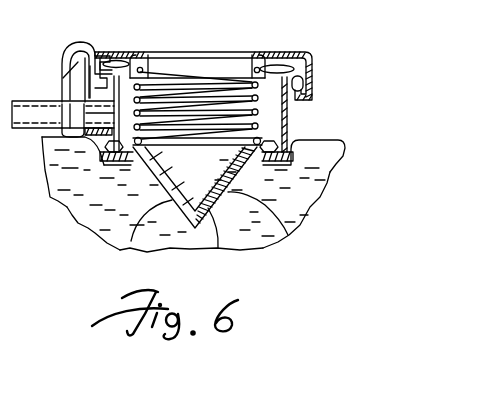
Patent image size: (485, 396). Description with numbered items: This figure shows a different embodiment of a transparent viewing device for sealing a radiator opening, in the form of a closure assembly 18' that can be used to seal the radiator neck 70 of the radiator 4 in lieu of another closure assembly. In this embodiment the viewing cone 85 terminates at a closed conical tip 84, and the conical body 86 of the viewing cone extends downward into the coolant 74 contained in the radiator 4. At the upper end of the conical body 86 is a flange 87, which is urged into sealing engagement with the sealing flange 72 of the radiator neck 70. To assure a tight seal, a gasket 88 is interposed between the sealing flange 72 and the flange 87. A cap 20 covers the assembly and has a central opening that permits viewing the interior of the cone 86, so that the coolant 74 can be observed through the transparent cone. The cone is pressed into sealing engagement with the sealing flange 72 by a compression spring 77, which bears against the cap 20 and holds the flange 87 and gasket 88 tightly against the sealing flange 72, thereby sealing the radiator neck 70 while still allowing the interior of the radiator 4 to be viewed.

The radiator 4 is at (331, 184).
The closure assembly 18' is at (207, 41).
The cap 20 is at (100, 52).
The radiator neck 70 is at (294, 110).
The sealing flange 72 is at (310, 161).
The coolant 74 is at (235, 194).
The compression spring 77 is at (140, 100).
The closed conical tip 84 is at (217, 250).
The viewing cone 85 is at (288, 235).
The conical body 86 is at (118, 250).
The flange 87 is at (258, 141).
The gasket 88 is at (73, 200).